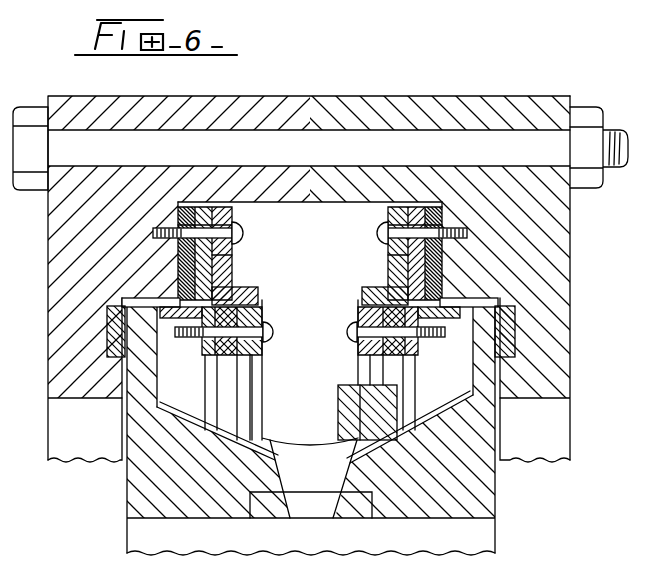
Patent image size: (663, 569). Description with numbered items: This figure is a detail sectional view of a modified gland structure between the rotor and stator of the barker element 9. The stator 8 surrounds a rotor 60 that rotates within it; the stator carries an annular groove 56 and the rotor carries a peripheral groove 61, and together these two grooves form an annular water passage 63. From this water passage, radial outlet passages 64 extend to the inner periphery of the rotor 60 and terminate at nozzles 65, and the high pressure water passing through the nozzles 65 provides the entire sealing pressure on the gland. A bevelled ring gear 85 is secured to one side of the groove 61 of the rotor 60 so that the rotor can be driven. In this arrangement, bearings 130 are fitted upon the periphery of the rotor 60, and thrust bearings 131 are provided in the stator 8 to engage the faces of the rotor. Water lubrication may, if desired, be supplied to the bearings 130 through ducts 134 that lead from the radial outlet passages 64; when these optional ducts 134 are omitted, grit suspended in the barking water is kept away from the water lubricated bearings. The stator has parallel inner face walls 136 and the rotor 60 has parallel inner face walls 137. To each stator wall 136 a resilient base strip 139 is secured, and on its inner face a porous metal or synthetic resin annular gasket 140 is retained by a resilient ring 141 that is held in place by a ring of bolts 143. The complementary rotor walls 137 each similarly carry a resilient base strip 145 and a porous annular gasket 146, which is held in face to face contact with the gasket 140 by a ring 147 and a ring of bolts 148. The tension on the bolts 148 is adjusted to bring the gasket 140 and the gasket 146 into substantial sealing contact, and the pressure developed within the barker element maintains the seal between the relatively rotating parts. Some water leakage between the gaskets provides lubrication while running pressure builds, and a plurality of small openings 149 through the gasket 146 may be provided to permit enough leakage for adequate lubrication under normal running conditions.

The stator 8 is at (438, 104).
The barker element 9 is at (513, 104).
The annular groove 56 is at (328, 256).
The rotor 60 is at (130, 496).
The peripheral groove 61 is at (280, 426).
The annular water passage 63 is at (317, 302).
The radial outlet passages 64 is at (292, 478).
The nozzles 65 is at (360, 520).
The bevelled ring gear 85 is at (338, 406).
The bearings 130 is at (158, 300).
The thrust bearings 131 is at (107, 340).
The ducts 134 is at (165, 406).
The stator inner face walls 136 is at (196, 205).
The rotor inner face walls 137 is at (206, 374).
The resilient base strip 139 is at (178, 260).
The annular gasket 140 is at (216, 262).
The resilient ring 141 is at (232, 210).
The bolts 143 is at (244, 233).
The resilient base strip 145 is at (206, 356).
The annular gasket 146 is at (236, 295).
The ring 147 is at (257, 348).
The bolts 148 is at (277, 331).
The small openings 149 is at (230, 280).